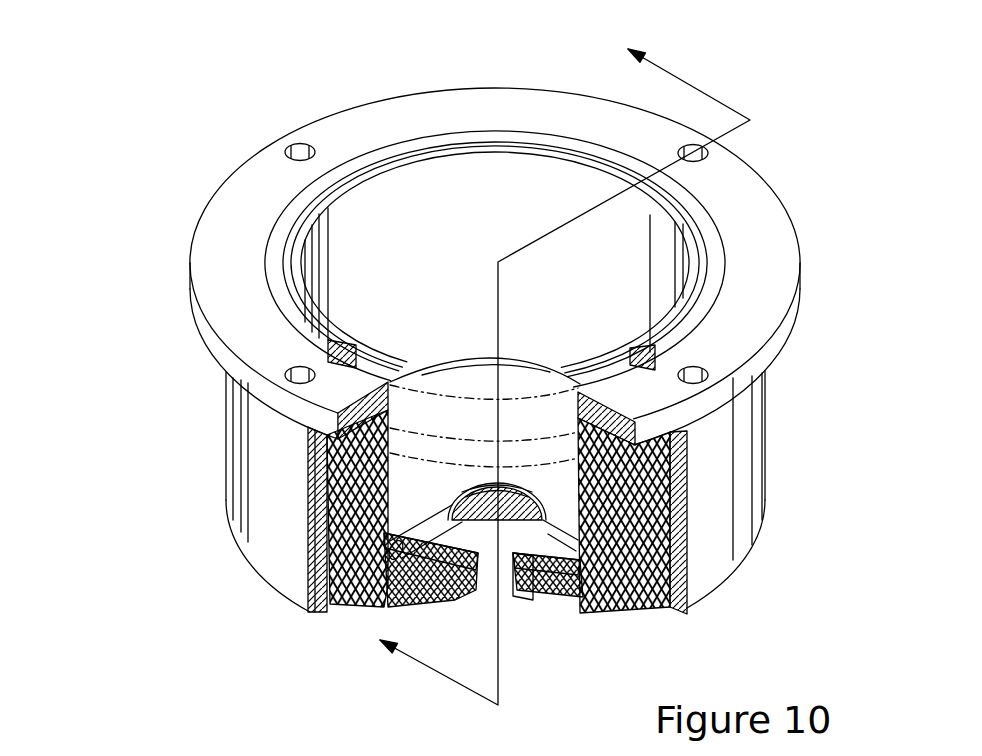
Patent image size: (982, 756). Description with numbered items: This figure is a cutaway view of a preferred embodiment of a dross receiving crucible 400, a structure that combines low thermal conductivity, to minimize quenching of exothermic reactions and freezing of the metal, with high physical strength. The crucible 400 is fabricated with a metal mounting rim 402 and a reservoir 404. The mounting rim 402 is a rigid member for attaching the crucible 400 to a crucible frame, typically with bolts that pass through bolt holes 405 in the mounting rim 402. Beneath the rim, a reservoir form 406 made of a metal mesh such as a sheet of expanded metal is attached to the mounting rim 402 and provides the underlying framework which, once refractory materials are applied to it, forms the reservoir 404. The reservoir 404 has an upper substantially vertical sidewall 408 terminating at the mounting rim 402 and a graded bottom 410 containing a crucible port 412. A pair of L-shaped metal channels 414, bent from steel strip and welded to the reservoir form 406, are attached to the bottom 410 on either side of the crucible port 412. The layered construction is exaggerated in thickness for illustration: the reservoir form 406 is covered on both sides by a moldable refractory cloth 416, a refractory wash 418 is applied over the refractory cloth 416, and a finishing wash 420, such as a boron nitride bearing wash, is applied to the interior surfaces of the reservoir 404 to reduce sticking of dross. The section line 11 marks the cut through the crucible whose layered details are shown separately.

The dross receiving crucible 400 is at (320, 100).
The mounting rim 402 is at (233, 225).
The reservoir 404 is at (215, 481).
The bolt holes 405 is at (594, 251).
The reservoir form 406 is at (357, 610).
The upper substantially vertical sidewall 408 is at (340, 548).
The graded bottom 410 is at (557, 598).
The crucible port 412 is at (492, 553).
The L-shaped metal channels 414 is at (510, 580).
The moldable refractory cloth 416 is at (675, 540).
The refractory wash 418 is at (688, 572).
The finishing wash 420 is at (660, 322).
The section 11— 11 is at (565, 375).